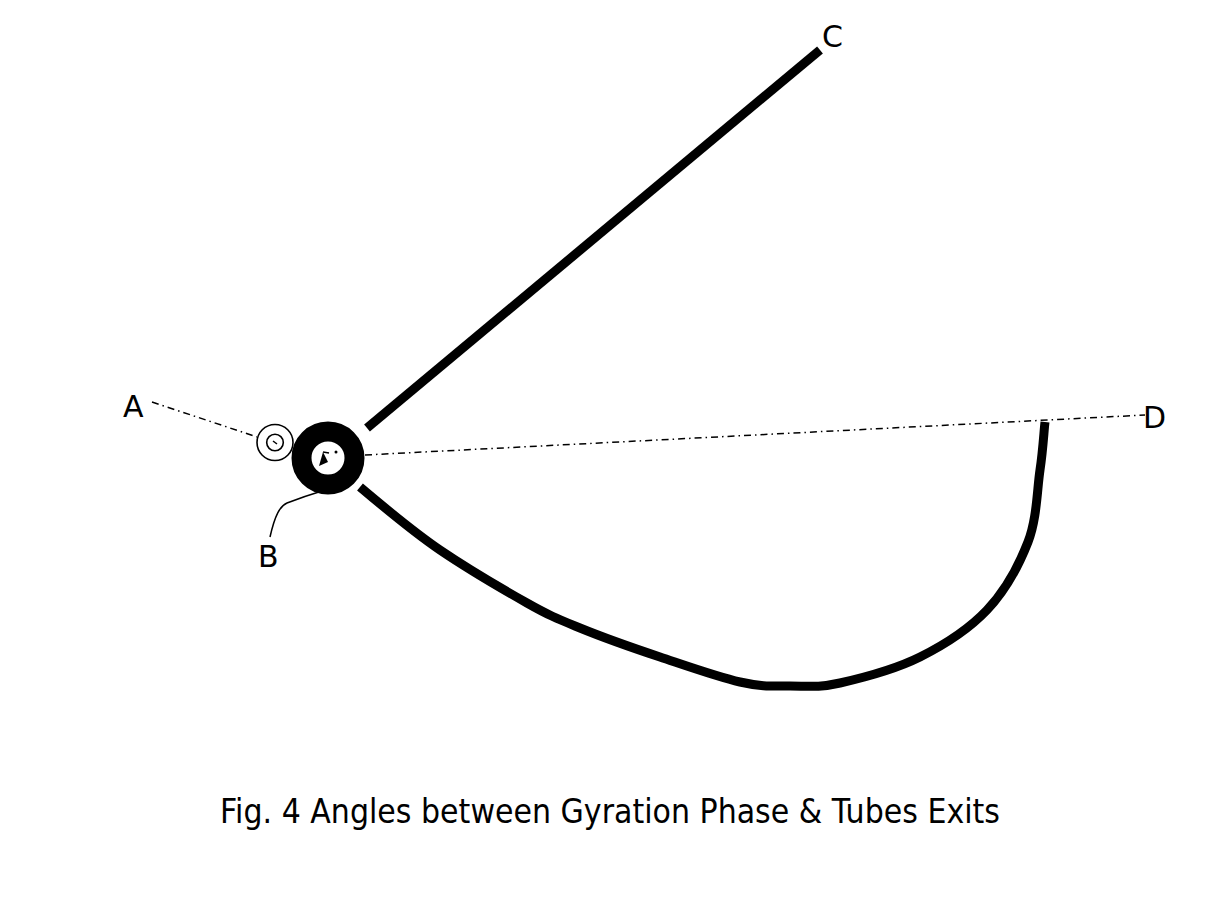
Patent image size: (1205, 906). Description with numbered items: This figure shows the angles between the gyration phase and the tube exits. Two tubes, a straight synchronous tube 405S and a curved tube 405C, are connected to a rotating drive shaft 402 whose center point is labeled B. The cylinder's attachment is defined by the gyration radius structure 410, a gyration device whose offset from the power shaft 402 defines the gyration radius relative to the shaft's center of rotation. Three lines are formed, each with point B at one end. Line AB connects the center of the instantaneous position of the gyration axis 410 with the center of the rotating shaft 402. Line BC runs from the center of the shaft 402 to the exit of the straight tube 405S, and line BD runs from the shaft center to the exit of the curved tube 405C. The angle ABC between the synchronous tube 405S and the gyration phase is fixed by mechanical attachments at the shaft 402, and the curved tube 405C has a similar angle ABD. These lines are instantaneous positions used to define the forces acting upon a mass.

The drive shaft 402 is at (337, 417).
The gyration radius structure 410 is at (261, 456).
The synchronous tube 405S is at (498, 318).
The curved tube 405C is at (740, 675).